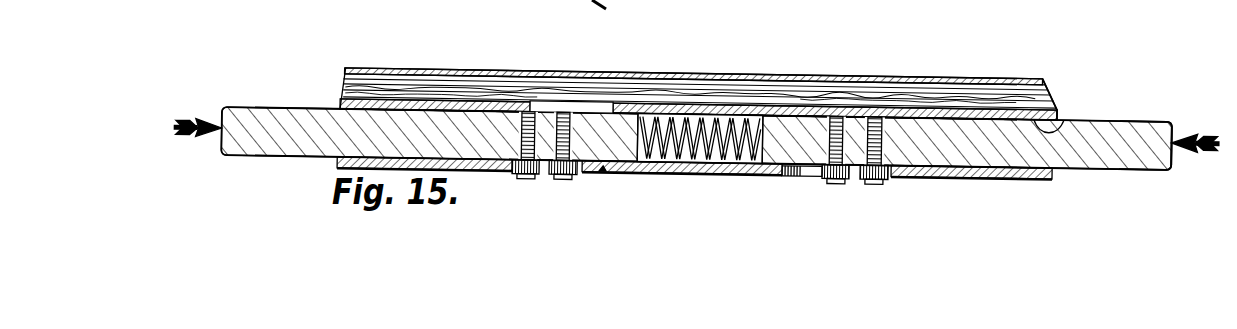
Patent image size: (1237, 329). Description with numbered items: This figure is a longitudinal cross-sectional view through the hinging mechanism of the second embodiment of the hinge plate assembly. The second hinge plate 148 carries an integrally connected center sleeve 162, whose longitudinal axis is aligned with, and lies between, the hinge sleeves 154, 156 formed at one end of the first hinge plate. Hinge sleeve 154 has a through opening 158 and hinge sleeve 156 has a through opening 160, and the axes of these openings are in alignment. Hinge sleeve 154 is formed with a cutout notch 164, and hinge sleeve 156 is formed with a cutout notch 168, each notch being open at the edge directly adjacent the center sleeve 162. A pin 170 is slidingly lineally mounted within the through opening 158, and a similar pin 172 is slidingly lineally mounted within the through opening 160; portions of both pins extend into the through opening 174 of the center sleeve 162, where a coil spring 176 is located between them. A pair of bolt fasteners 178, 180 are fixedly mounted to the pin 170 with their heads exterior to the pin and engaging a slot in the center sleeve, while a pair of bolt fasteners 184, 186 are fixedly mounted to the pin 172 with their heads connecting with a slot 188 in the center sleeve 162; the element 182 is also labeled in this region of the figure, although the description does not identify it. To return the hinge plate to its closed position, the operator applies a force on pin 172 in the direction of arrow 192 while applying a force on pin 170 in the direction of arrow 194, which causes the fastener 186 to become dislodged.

The second hinge plate 148 is at (962, 80).
The hinge sleeve 154 is at (445, 67).
The hinge sleeve 156 is at (1053, 105).
The through opening 158 is at (485, 102).
The through opening 160 is at (1050, 132).
The center sleeve 162 is at (805, 102).
The cutout notch 164 is at (523, 176).
The cutout notch 168 is at (873, 180).
The pin 170 is at (314, 106).
The pin 172 is at (1143, 121).
The through opening 174 is at (615, 107).
The coil spring 176 is at (700, 108).
The bolt fastener 178 is at (533, 175).
The bolt fastener 180 is at (567, 175).
The bottom plate 182 is at (597, 171).
The bolt fastener 184 is at (847, 110).
The bolt fastener 186 is at (878, 113).
The slot 188 is at (810, 172).
The arrow 192 is at (1190, 150).
The arrow 194 is at (202, 105).